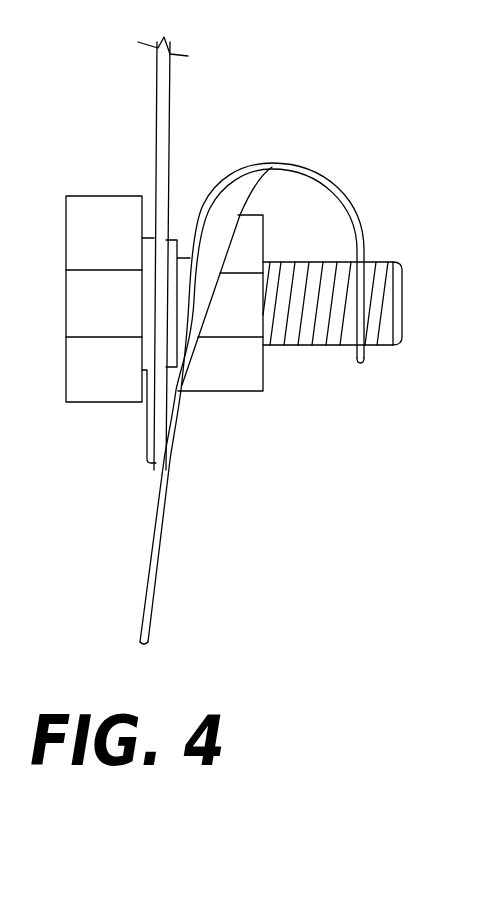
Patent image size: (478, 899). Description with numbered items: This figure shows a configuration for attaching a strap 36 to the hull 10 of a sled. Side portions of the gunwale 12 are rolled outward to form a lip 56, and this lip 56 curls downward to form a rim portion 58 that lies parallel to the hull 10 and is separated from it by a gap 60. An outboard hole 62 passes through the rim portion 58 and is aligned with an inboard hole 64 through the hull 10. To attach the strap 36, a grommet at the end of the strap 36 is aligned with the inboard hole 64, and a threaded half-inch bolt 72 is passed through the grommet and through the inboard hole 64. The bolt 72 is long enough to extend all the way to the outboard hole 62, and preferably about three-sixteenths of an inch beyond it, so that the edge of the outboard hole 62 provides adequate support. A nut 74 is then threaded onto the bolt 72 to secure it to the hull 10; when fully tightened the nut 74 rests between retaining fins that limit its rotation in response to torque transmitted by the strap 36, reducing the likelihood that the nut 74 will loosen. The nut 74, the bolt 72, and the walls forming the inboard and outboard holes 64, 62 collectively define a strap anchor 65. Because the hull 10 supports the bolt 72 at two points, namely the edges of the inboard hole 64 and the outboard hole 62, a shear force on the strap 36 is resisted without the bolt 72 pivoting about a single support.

The hull 10 is at (166, 510).
The gunwale 12 is at (378, 203).
The strap 36 is at (158, 148).
The lip 56 is at (270, 161).
The rim portion 58 is at (364, 361).
The gap 60 is at (357, 324).
The outboard hole 62 is at (382, 250).
The inboard hole 64 is at (182, 400).
The strap anchor 65 is at (349, 91).
The bolt 72 is at (88, 403).
The nut 74 is at (236, 393).